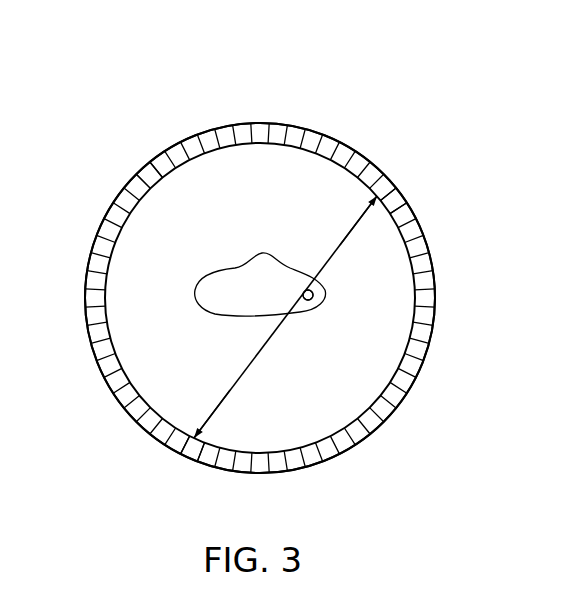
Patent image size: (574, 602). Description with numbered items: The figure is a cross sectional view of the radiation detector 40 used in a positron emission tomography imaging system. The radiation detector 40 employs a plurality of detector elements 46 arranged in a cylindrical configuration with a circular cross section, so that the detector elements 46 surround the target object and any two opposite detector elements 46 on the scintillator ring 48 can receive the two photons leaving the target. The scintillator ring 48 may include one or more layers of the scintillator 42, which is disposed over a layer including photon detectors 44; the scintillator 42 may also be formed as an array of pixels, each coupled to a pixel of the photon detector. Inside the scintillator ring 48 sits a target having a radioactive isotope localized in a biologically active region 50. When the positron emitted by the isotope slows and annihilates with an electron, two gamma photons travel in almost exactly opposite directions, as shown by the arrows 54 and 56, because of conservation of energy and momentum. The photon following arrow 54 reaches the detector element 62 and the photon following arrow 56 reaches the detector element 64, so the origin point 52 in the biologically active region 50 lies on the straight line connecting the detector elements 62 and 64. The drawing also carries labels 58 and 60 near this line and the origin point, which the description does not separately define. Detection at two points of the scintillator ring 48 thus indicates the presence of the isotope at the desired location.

The radiation detector 40 is at (405, 72).
The scintillator 42 is at (88, 264).
The photon detectors 44 is at (260, 298).
The detector elements 46 is at (437, 320).
The scintillator ring 48 is at (160, 156).
The biologically active region 50 is at (309, 302).
The origin point 52 is at (322, 296).
The arrow 54 is at (223, 378).
The arrow 56 is at (348, 242).
The chord line 58 is at (290, 318).
The reference point 60 is at (310, 288).
The detector element 62 is at (192, 456).
The detector element 64 is at (388, 189).